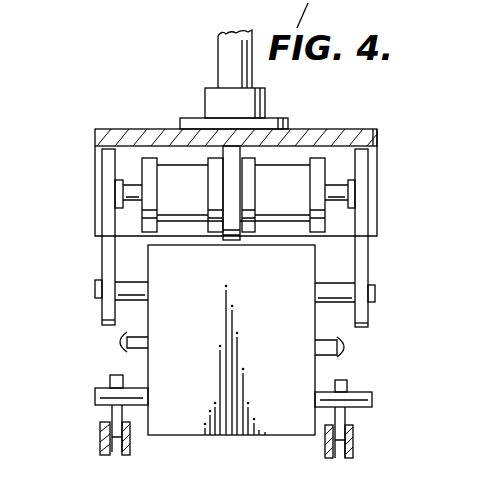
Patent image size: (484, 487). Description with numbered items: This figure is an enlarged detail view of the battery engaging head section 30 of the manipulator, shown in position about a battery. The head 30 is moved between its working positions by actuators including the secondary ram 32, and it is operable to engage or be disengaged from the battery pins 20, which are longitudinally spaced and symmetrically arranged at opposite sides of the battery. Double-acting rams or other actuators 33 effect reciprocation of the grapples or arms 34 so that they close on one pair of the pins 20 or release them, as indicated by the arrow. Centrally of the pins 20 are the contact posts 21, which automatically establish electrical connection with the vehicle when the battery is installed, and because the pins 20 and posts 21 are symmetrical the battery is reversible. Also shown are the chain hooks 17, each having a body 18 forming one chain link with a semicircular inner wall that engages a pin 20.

The battery engaging head section 30 is at (118, 126).
The secondary ram 32 is at (218, 62).
The double-acting rams 33 is at (168, 177).
The grapple arms 34 is at (107, 213).
The pins 20 is at (95, 290).
The contact posts 21 is at (350, 355).
The hooks 17 is at (115, 375).
The body 18 is at (100, 447).